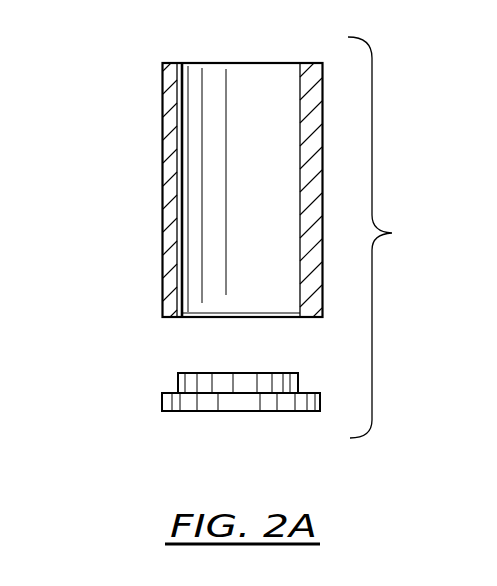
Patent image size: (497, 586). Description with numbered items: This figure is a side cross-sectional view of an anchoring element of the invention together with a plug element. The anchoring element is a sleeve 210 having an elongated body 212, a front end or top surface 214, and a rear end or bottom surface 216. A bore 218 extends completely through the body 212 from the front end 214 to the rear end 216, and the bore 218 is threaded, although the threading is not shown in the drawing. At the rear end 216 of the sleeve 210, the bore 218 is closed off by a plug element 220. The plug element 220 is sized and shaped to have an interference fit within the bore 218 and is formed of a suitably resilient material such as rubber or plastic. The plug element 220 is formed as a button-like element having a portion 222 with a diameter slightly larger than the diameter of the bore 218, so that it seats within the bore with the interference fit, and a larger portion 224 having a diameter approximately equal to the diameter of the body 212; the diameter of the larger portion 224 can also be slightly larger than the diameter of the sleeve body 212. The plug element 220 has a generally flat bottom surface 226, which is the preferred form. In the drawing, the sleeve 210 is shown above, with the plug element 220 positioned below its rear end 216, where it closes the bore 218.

The sleeve 210 is at (192, 187).
The elongated body 212 is at (162, 182).
The front end 214 is at (208, 63).
The rear end 216 is at (258, 317).
The bore 218 is at (300, 80).
The plug element 220 is at (216, 412).
The portion 222 is at (180, 386).
The larger portion 224 is at (162, 400).
The flat bottom surface 226 is at (247, 411).